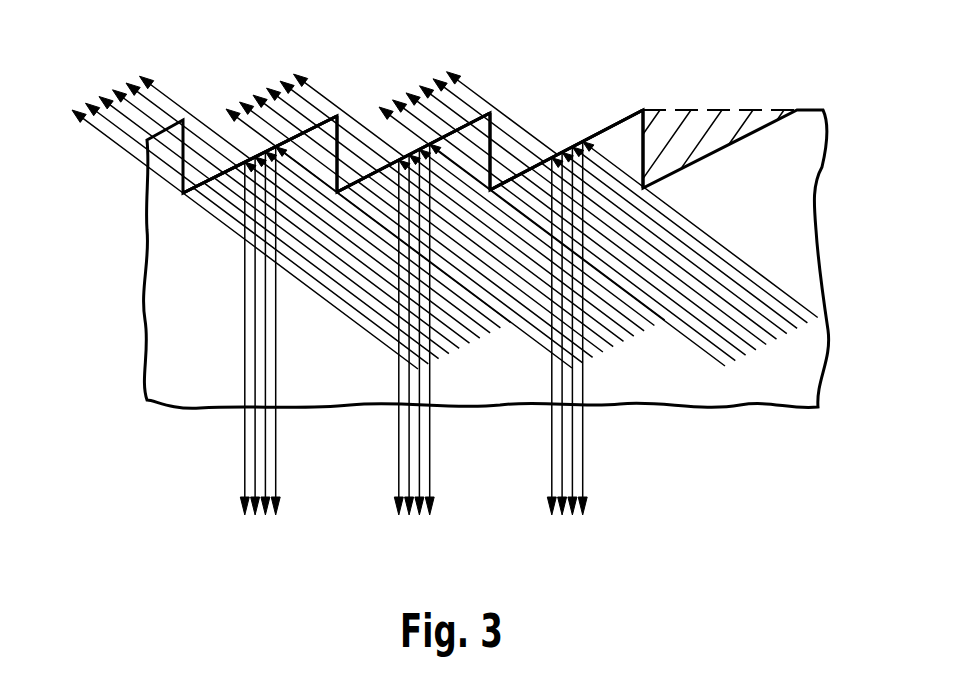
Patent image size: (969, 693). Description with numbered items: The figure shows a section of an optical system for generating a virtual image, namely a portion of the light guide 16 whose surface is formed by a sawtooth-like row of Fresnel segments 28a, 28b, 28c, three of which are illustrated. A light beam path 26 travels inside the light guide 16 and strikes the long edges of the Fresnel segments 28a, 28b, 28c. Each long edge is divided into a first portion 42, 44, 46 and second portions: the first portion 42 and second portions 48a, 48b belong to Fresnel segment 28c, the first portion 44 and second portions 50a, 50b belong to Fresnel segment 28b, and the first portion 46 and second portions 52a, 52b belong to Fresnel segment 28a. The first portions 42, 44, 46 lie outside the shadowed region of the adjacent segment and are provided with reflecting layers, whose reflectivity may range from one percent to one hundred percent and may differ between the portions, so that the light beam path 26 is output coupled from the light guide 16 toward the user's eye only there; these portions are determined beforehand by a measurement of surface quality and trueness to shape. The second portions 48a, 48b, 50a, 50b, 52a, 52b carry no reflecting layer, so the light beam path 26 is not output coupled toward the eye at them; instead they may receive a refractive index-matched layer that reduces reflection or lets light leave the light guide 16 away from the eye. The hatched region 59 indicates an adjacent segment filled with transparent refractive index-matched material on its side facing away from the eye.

The light guide 16 is at (805, 252).
The light beam path 26 is at (728, 247).
The Fresnel segment 28a is at (630, 138).
The Fresnel segment 28b is at (490, 117).
The Fresnel segment 28c is at (333, 117).
The first portion 42 is at (260, 147).
The first portion 44 is at (415, 147).
The first portion 46 is at (567, 147).
The second portion 48a is at (212, 178).
The second portion 48b is at (323, 140).
The second portion 50a is at (367, 180).
The second portion 50b is at (478, 140).
The second portion 52a is at (523, 175).
The second portion 52b is at (608, 122).
The hatched region 59 is at (733, 127).